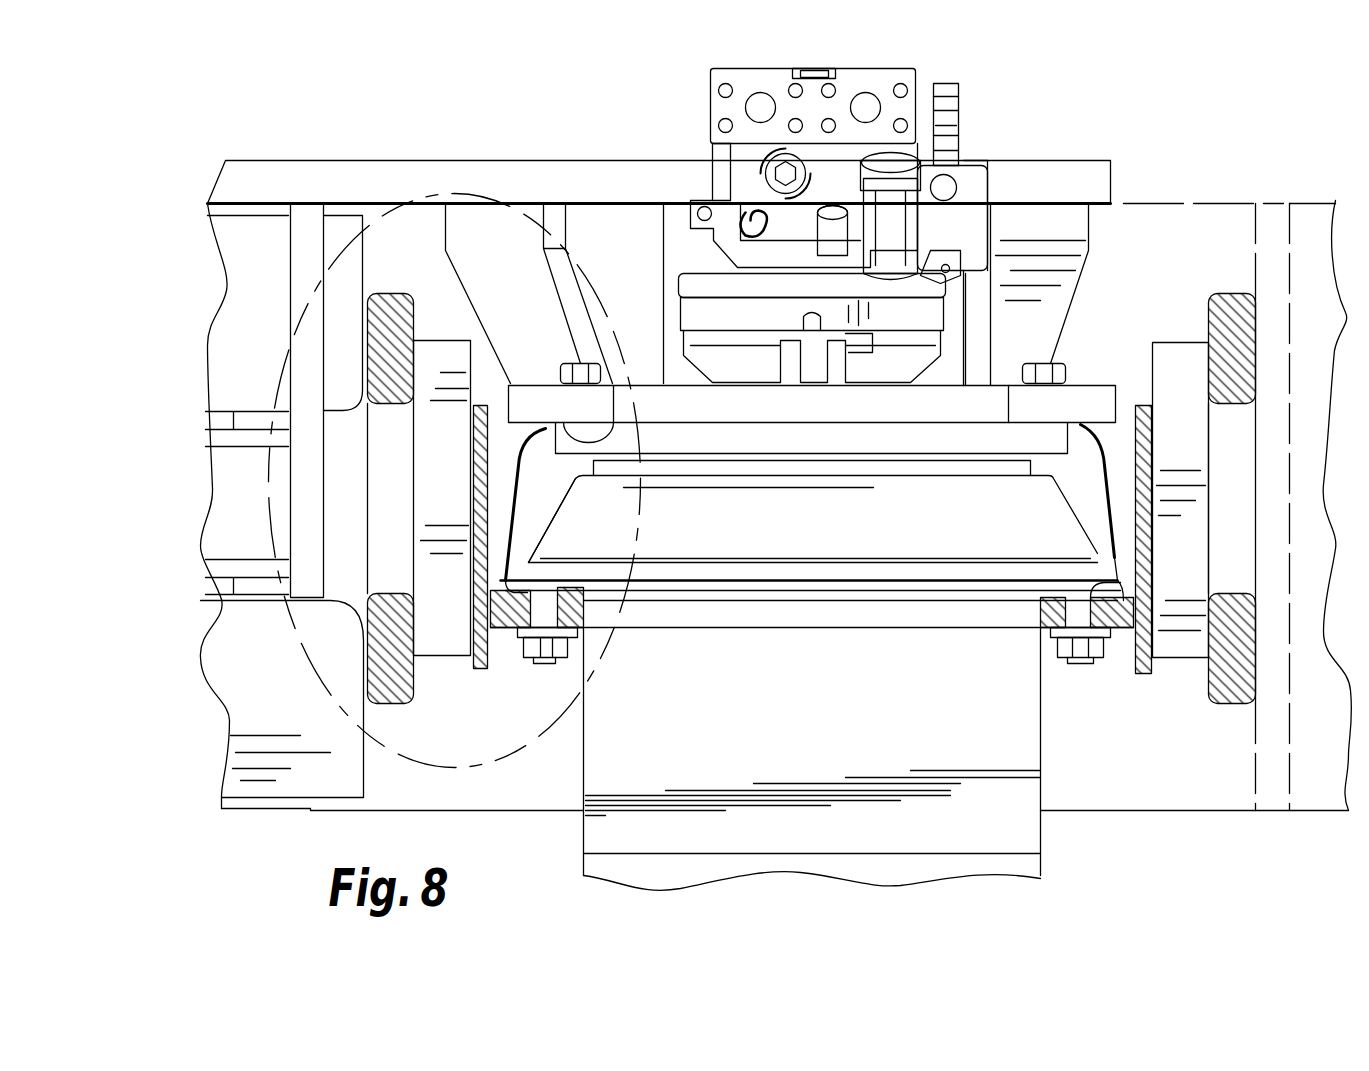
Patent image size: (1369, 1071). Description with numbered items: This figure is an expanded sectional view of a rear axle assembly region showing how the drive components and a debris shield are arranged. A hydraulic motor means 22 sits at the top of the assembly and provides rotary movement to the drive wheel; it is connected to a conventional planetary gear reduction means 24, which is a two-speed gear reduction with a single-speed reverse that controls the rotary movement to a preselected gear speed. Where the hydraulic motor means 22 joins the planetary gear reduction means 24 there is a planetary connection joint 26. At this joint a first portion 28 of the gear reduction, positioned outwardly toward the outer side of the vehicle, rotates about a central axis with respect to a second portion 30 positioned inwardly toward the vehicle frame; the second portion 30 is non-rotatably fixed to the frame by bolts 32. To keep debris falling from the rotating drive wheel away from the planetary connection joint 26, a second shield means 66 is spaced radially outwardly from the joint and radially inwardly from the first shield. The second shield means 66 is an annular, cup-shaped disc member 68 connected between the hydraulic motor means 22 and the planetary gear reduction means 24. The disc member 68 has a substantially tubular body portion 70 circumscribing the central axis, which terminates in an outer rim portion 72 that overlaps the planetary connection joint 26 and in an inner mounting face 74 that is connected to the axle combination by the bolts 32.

The hydraulic motor means 22 is at (898, 108).
The planetary gear reduction means 24 is at (1012, 726).
The planetary connection joint 26 is at (849, 462).
The first portion 28 is at (749, 550).
The second portion 30 is at (808, 438).
The bolts 32 is at (583, 362).
The second shield means 66 is at (500, 487).
The disc member 68 is at (512, 527).
The tubular body portion 70 is at (528, 478).
The outer rim portion 72 is at (508, 567).
The inner mounting face 74 is at (632, 420).